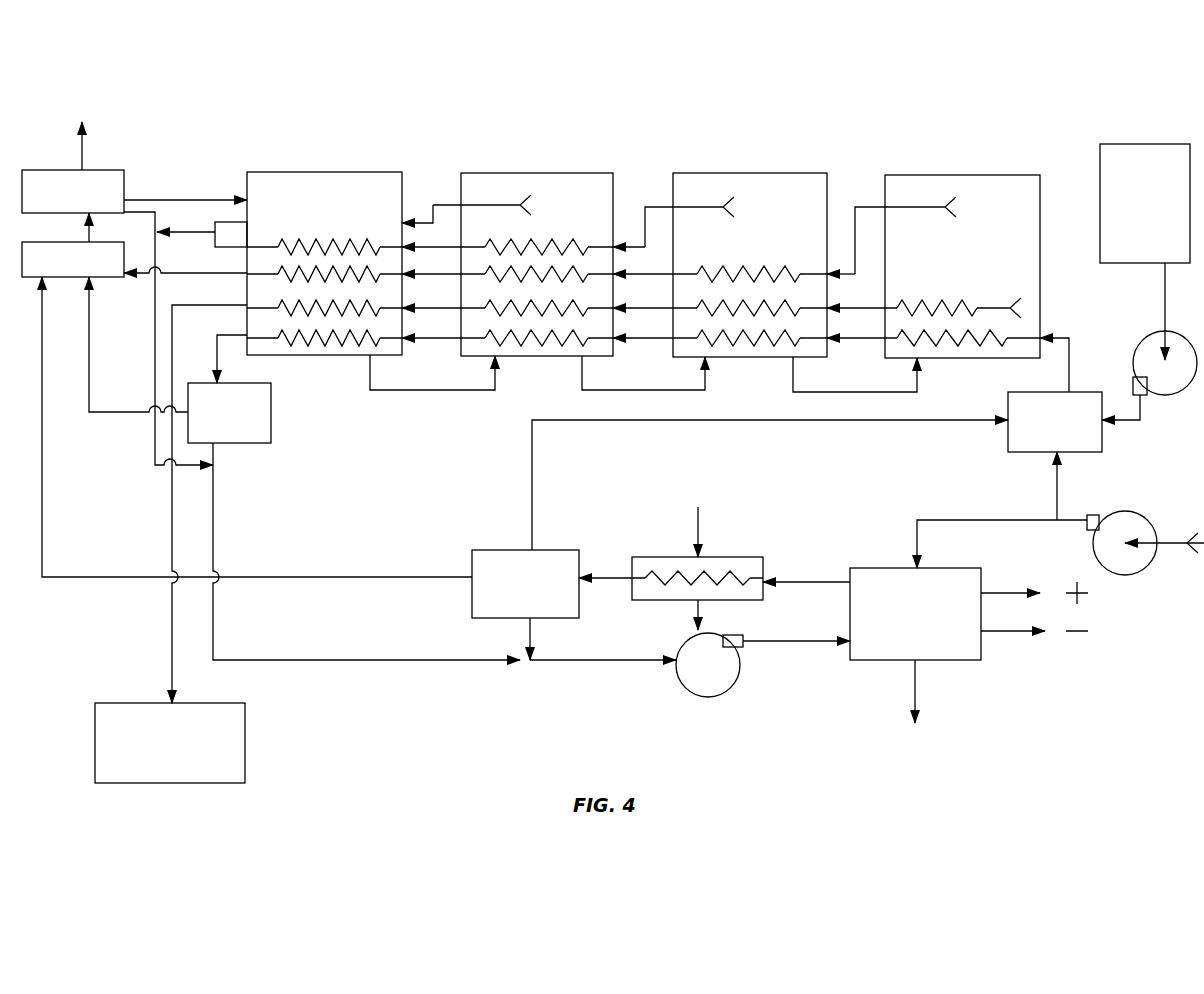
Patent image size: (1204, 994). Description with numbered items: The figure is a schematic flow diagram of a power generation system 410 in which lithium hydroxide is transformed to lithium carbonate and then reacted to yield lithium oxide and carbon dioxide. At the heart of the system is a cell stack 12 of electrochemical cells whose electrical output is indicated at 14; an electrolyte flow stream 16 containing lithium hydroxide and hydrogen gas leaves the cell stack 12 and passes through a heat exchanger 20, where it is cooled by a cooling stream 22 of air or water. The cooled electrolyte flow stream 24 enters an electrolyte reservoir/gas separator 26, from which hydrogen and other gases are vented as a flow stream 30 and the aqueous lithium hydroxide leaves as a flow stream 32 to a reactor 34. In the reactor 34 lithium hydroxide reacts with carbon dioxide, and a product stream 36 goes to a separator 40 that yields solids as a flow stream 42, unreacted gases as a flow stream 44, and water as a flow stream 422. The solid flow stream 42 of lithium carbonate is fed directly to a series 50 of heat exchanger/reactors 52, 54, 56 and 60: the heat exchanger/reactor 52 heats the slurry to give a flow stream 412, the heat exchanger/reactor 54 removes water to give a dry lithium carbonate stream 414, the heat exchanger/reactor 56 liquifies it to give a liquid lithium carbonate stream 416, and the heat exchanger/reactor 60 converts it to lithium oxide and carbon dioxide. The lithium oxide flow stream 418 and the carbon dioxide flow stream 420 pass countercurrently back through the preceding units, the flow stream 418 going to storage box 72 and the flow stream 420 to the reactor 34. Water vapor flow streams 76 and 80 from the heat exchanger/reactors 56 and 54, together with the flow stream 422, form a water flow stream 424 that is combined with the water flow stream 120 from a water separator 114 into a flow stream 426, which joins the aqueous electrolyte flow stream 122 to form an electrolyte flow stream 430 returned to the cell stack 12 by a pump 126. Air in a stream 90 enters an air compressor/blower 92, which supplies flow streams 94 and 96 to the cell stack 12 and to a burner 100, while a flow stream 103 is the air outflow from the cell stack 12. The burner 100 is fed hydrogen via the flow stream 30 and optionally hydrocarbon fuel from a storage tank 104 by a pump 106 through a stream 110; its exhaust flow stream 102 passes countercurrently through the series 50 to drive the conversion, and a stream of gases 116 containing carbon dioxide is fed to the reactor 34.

The cell stack 12 is at (915, 614).
The electrical output terminals 14 is at (1034, 606).
The electrolyte flow stream 16 is at (812, 582).
The heat exchanger 20 is at (748, 557).
The cooling stream 22 is at (702, 532).
The cooled electrolyte flow stream 24 is at (606, 578).
The electrolyte reservoir/gas separator 26 is at (525, 584).
The flow stream 30 is at (575, 456).
The flow stream 32 is at (328, 577).
The reactor 34 is at (73, 259).
The product stream 36 is at (86, 232).
The separator 40 is at (73, 191).
The flow stream 42 is at (168, 200).
The flow stream 44 is at (78, 143).
The series of heat exchangers/reactors 50 is at (648, 176).
The heat exchanger/reactor 52 is at (306, 172).
The heat exchanger/reactor 54 is at (510, 173).
The heat exchanger/reactor 56 is at (773, 173).
The heat exchanger/reactor 60 is at (943, 175).
The storage box 72 is at (170, 743).
The water vapor flow stream 76 is at (233, 247).
The water vapor flow stream 80 is at (215, 222).
The air stream 90 is at (1072, 518).
The air compressor/blower 92 is at (1093, 540).
The flow stream 94 is at (937, 520).
The flow stream 96 is at (1055, 490).
The burner 100 is at (1055, 422).
The exhaust flow stream 102 is at (233, 340).
The flow stream 103 is at (916, 689).
The storage tank 104 is at (1145, 203).
The pump 106 is at (1152, 338).
The stream 110 is at (1165, 295).
The water separator 114 is at (229, 413).
The stream of gases 116 is at (120, 414).
The water flow stream 120 is at (215, 457).
The aqueous electrolyte flow stream 122 is at (528, 632).
The pump 126 is at (712, 692).
The system 410 is at (1045, 152).
The flow stream 412 is at (450, 392).
The dry lithium carbonate stream 414 is at (605, 392).
The liquid lithium carbonate stream 416 is at (810, 392).
The flow stream 418 is at (240, 306).
The flow stream 420 is at (233, 274).
The flow stream 422 is at (155, 222).
The water flow stream 424 is at (153, 362).
The flow stream 426 is at (215, 520).
The electrolyte flow stream 430 is at (590, 663).